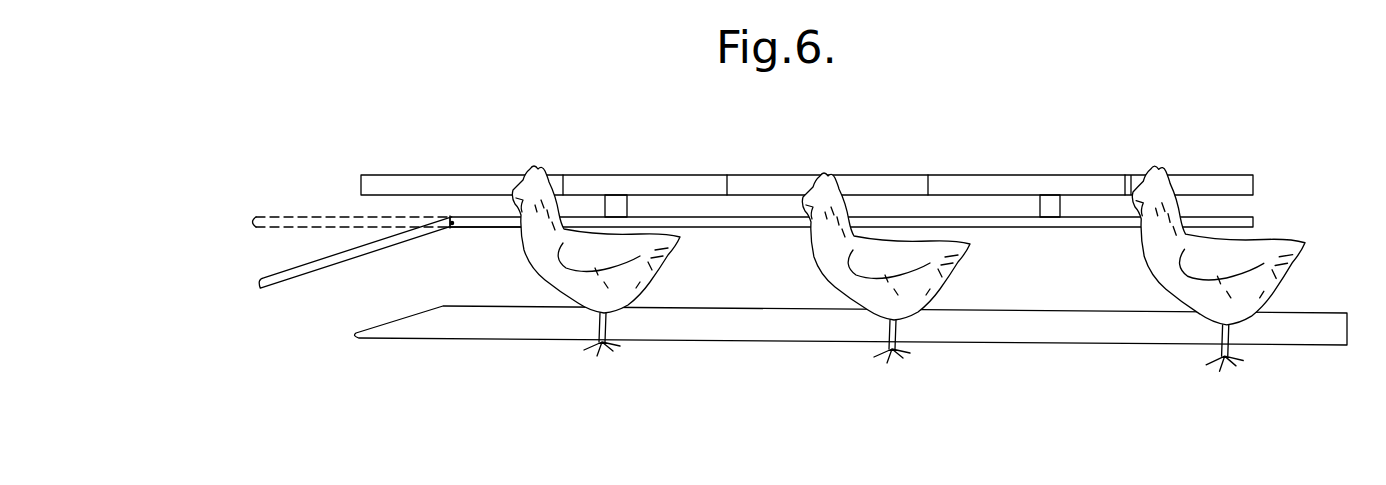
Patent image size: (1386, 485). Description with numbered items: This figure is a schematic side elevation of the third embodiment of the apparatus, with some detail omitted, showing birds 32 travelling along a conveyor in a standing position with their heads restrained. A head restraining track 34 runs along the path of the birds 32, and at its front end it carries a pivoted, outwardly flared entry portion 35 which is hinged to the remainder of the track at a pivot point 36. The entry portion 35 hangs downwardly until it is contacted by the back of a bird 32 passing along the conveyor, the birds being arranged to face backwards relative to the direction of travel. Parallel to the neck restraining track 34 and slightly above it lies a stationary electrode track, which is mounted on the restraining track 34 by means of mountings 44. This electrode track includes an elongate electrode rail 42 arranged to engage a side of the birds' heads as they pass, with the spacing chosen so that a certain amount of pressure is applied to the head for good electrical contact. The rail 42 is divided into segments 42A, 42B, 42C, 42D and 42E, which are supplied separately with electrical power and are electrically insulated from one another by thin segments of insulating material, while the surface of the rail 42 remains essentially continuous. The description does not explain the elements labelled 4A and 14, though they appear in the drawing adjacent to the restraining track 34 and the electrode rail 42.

The electrode rail 42 is at (807, 145).
The segment 42A is at (394, 180).
The segment 42B is at (615, 179).
The segment 42C is at (872, 179).
The segment 42D is at (1019, 180).
The segment 42E is at (1217, 179).
The pivot point 36 is at (450, 215).
The perch bar 4A is at (495, 218).
The partition 14 is at (622, 208).
The mounting 44 is at (1057, 208).
The front entry portion 35 is at (287, 242).
The head restraining track 34 is at (473, 231).
The bird 32 is at (550, 263).